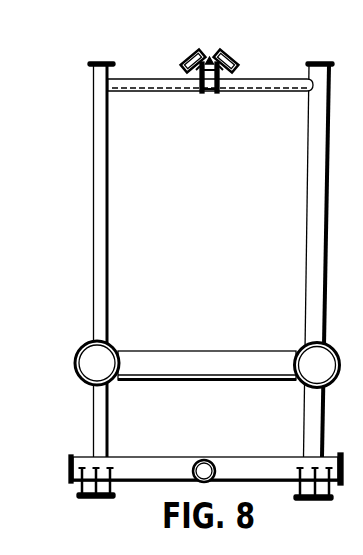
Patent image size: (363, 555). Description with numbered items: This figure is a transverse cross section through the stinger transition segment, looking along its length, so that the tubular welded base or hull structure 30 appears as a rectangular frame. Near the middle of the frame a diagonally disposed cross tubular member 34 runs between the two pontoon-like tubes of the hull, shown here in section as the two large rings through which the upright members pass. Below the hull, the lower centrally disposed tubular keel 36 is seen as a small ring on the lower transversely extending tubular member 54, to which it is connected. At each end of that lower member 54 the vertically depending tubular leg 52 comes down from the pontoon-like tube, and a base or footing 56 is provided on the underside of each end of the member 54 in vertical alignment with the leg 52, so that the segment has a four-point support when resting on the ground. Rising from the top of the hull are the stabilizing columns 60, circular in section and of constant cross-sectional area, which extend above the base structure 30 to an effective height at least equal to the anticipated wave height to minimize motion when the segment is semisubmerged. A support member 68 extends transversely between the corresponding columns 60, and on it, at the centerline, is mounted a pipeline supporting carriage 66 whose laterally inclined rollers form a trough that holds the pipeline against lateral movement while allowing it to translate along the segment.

The base or hull structure 30 is at (76, 357).
The cross tubular member 34 is at (217, 354).
The tubular keel 36 is at (216, 459).
The tubular leg 52 is at (91, 403).
The lower transversely extending tubular member 54 is at (161, 456).
The base or footing 56 is at (78, 494).
The stabilizing column 60 is at (94, 182).
The pipeline supporting carriage 66 is at (180, 50).
The support member 68 is at (178, 93).